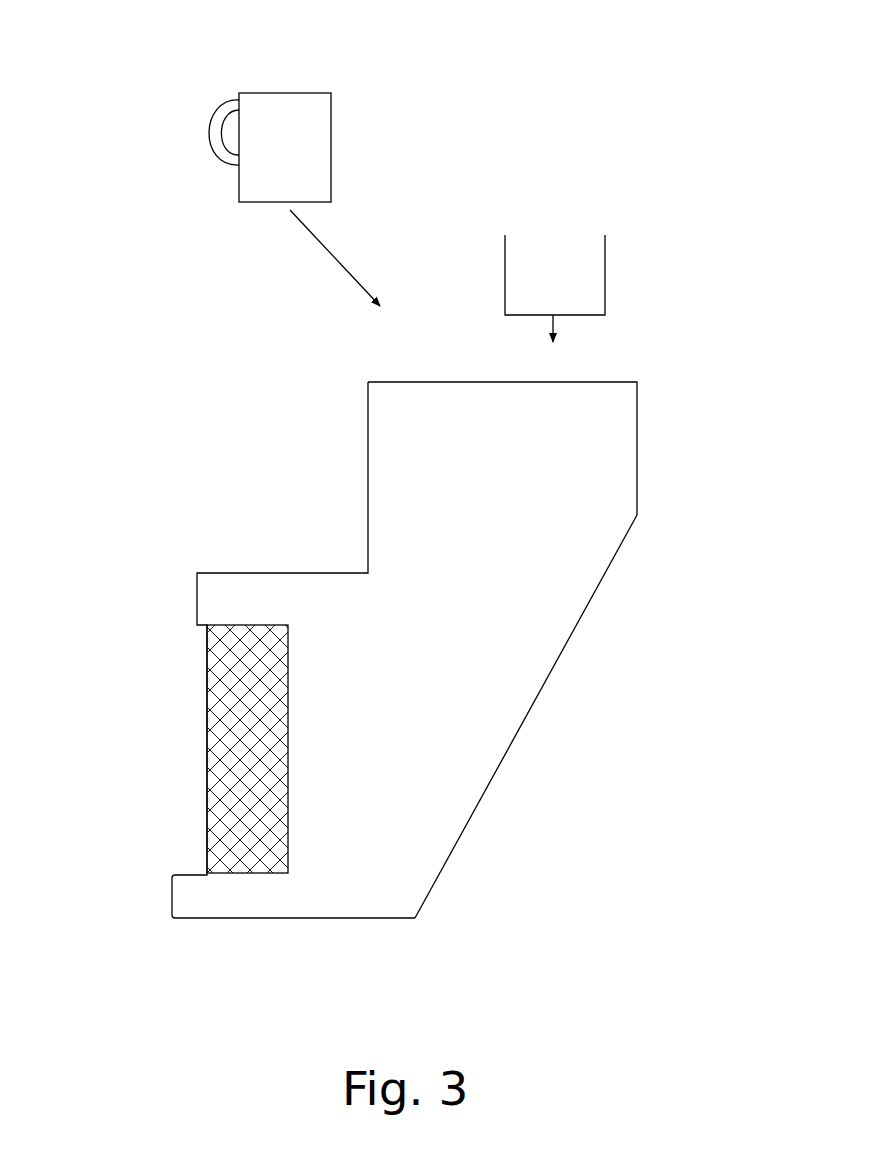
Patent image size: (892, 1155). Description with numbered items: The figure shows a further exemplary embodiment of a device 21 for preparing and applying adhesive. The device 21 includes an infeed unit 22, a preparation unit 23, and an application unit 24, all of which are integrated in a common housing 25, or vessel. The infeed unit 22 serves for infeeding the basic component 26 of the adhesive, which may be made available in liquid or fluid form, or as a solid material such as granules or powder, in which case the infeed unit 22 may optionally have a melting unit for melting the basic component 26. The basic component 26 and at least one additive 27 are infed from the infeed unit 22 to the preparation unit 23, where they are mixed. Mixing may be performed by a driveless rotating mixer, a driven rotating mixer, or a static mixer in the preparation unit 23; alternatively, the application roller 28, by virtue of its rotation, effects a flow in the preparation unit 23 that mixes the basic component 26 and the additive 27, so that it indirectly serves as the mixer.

The device 21 is at (151, 430).
The infeed unit 22 is at (627, 473).
The preparation unit 23 is at (502, 678).
The application unit 24 is at (352, 862).
The housing 25 is at (703, 612).
The basic component 26 is at (555, 325).
The additive 27 is at (279, 105).
The application roller 28 is at (237, 750).